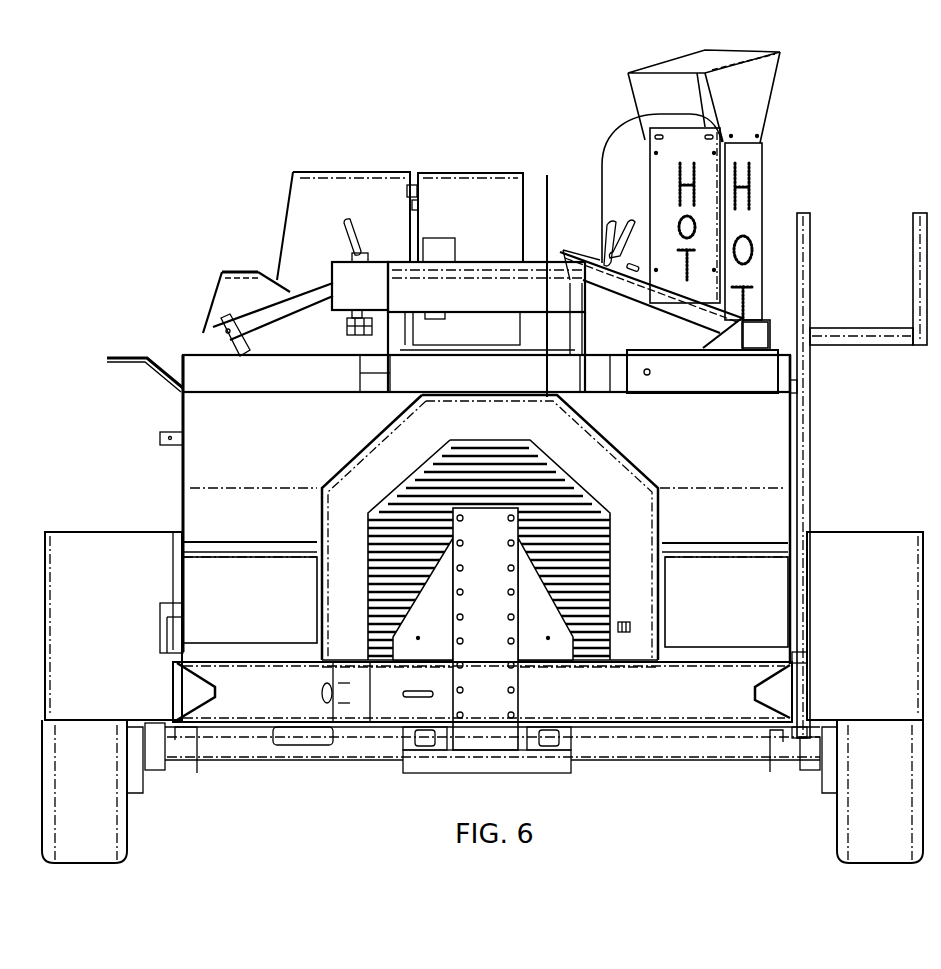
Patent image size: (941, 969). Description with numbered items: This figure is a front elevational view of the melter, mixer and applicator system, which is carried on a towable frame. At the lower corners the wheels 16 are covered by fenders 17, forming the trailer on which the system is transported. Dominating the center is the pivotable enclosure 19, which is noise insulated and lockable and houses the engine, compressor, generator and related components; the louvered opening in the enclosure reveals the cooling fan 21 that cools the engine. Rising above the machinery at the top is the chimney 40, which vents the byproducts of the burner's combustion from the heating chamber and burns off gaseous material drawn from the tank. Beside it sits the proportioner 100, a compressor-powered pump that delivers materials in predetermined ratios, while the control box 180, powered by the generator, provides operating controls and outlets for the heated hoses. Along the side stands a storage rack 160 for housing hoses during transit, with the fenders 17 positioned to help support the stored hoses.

The wheels 16 is at (96, 796).
The fenders 17 is at (103, 664).
The pivotable enclosure 19 is at (283, 461).
The cooling fan 21 is at (420, 470).
The chimney 40 is at (762, 163).
The proportioner 100 is at (600, 177).
The storage racks 160 is at (912, 250).
The control box 180 is at (438, 183).